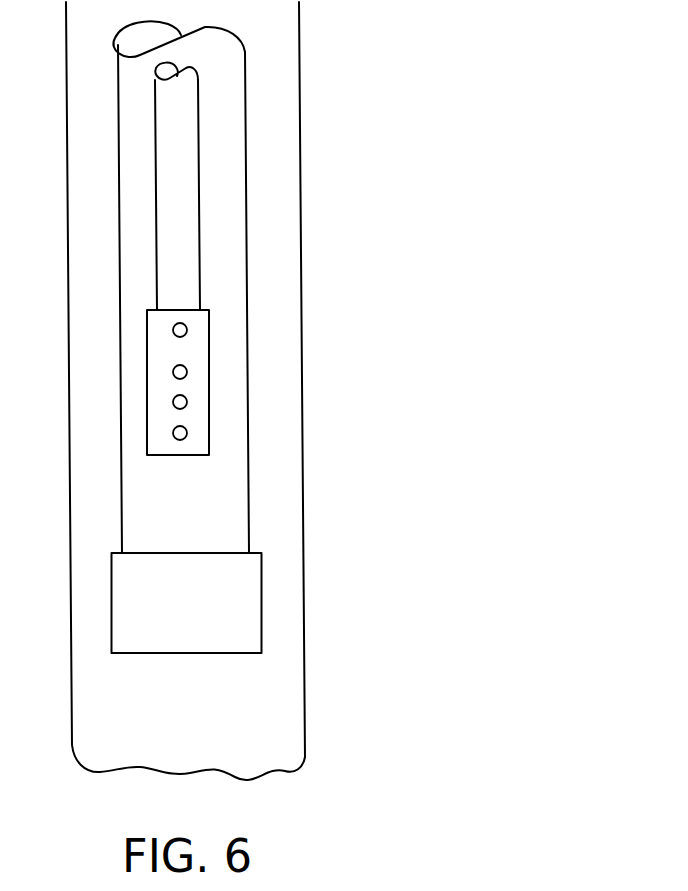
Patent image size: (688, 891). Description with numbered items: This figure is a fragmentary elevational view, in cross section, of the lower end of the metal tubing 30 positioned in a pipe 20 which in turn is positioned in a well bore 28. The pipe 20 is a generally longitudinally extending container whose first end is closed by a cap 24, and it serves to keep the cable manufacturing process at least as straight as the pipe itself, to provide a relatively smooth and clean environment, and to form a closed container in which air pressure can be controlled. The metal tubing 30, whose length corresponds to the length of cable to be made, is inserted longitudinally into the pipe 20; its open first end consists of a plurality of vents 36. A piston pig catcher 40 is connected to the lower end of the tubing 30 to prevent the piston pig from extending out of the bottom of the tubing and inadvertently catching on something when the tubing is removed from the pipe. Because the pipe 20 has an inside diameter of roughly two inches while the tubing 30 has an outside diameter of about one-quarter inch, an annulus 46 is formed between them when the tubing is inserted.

The pipe 20 is at (262, 104).
The cap 24 is at (275, 605).
The well bore 28 is at (275, 184).
The metal tubing 30 is at (215, 252).
The vents 36 is at (210, 370).
The piston pig catcher 40 is at (230, 443).
The annulus 46 is at (132, 257).